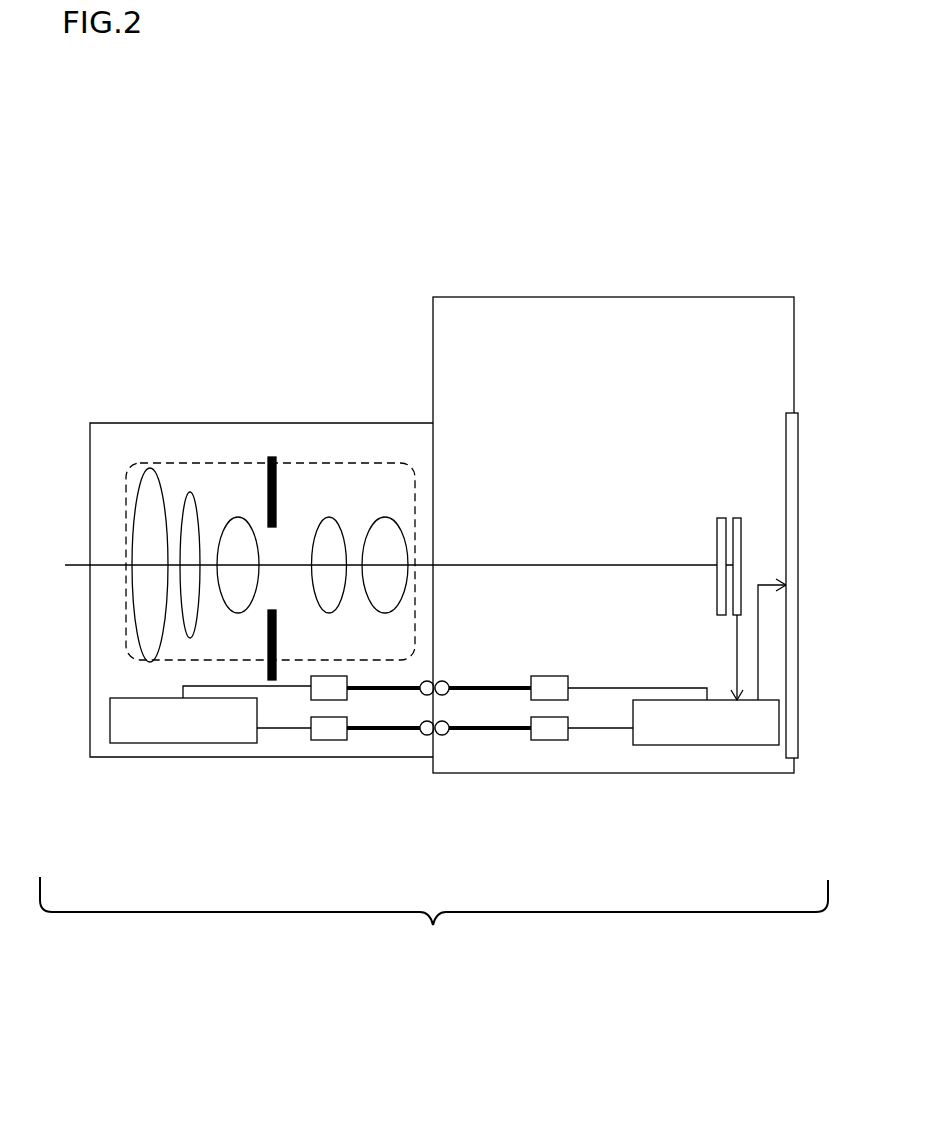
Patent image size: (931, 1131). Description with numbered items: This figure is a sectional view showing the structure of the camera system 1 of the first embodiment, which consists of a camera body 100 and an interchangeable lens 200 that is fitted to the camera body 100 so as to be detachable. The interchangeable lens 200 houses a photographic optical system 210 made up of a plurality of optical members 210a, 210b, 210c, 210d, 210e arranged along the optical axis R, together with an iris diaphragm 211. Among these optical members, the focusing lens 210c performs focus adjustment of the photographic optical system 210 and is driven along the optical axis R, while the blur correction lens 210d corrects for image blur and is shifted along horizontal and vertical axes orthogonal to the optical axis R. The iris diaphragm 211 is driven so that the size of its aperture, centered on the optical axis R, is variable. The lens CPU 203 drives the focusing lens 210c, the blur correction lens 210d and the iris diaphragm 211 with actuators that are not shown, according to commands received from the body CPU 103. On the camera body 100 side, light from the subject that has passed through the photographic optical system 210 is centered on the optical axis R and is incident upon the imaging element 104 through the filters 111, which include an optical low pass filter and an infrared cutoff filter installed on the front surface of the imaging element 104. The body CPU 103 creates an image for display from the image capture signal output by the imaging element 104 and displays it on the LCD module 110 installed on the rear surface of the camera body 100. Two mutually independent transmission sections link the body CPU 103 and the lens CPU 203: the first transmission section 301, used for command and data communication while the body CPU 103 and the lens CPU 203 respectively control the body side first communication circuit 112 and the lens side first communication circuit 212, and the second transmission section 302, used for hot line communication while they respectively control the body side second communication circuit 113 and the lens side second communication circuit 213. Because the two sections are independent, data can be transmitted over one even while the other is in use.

The camera system 1 is at (434, 919).
The camera body 100 is at (632, 297).
The body CPU 103 is at (705, 745).
The imaging element 104 is at (737, 517).
The LCD module 110 is at (787, 447).
The filters 111 is at (720, 517).
The body side first communication circuit 112 is at (552, 675).
The body side second communication circuit 113 is at (550, 742).
The interchangeable lens 200 is at (420, 422).
The lens CPU 203 is at (183, 743).
The photographic optical system 210 is at (125, 628).
The optical member 210a is at (150, 468).
The optical member 210b is at (190, 492).
The focusing lens 210c is at (238, 517).
The blur correction lens 210d is at (329, 517).
The optical member 210e is at (385, 517).
The iris diaphragm 211 is at (277, 495).
The lens side first communication circuit 212 is at (328, 676).
The lens side second communication circuit 213 is at (328, 740).
The first transmission section 301 is at (393, 684).
The second transmission section 302 is at (372, 732).
The optical axis R is at (477, 565).